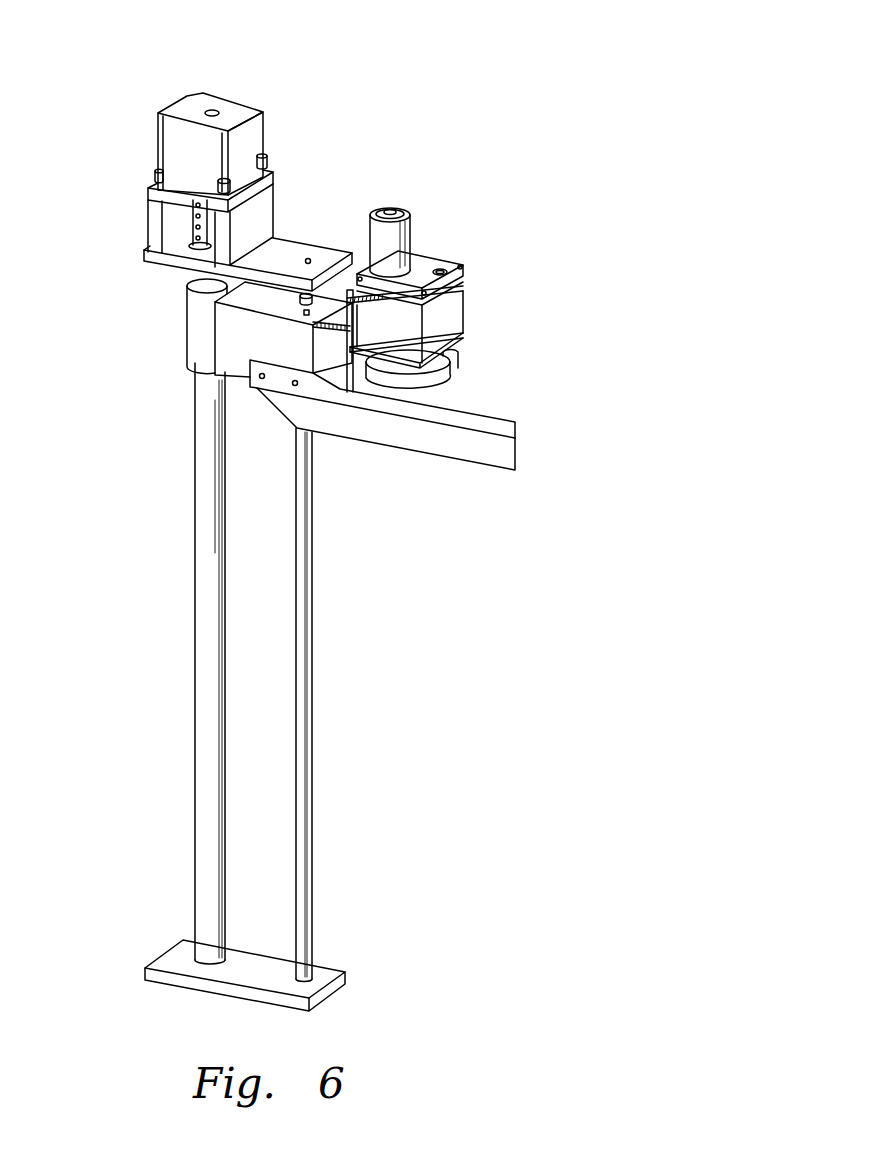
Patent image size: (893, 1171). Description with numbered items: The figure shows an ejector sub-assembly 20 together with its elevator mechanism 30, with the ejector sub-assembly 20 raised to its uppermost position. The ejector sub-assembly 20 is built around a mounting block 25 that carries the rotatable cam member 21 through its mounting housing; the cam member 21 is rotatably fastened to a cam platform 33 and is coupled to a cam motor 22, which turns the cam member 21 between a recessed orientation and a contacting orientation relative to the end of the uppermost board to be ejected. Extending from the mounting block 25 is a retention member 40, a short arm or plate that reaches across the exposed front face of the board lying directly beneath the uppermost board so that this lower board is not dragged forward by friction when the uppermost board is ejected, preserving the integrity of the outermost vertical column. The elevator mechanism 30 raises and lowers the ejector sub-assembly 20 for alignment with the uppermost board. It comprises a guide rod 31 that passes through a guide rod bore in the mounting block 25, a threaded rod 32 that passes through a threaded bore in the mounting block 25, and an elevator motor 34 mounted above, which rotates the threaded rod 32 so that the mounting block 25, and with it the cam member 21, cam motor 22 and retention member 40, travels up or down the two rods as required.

The ejector sub-assembly 20 is at (465, 217).
The rotatable cam member 21 is at (448, 352).
The cam motor 22 is at (368, 238).
The mounting block 25 is at (241, 334).
The elevator mechanism 30 is at (168, 76).
The guide rod 31 is at (312, 757).
The threaded rod 32 is at (196, 699).
The cam platform 33 is at (256, 216).
The elevator motor 34 is at (184, 153).
The retention member 40 is at (472, 442).